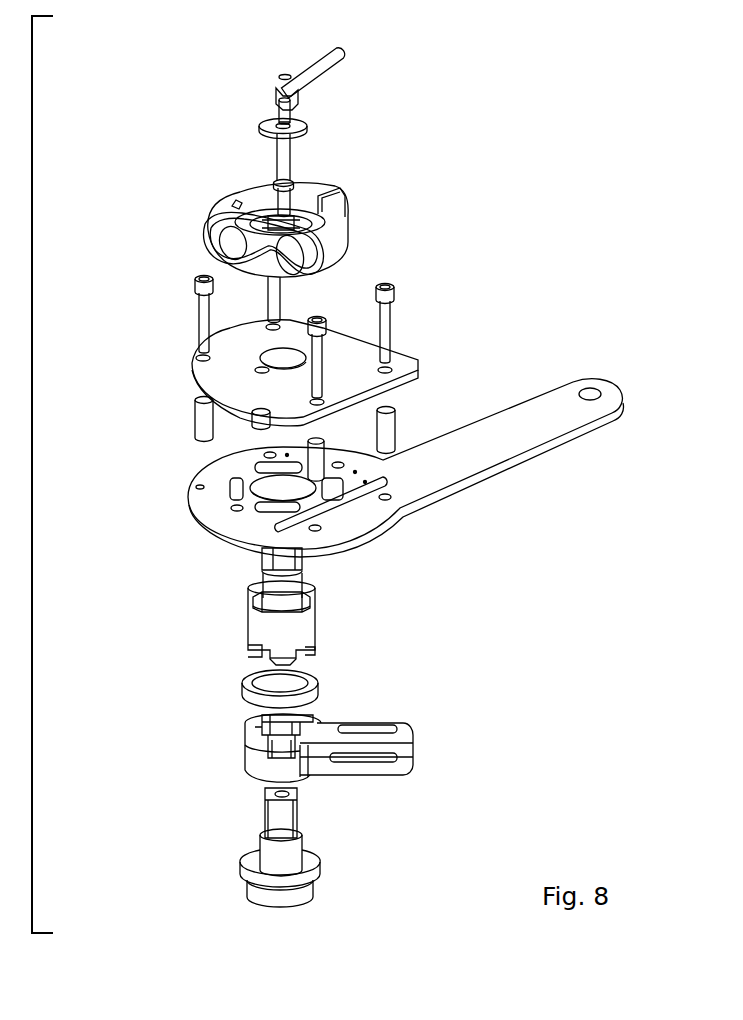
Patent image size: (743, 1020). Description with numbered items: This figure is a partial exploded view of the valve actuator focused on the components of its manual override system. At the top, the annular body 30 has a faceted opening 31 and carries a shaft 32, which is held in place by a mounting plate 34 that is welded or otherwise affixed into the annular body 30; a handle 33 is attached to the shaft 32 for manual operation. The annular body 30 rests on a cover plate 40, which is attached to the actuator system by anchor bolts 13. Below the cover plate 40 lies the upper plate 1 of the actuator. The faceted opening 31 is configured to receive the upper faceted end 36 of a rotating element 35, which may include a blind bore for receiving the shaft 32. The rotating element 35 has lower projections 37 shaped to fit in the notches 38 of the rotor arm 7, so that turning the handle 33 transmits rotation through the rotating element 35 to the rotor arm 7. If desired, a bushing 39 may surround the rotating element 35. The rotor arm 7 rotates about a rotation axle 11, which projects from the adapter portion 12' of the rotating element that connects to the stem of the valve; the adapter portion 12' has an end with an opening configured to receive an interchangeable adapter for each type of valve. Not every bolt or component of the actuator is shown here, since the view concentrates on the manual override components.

The upper plate 1 is at (540, 422).
The rotor arm 7 is at (257, 762).
The rotation axle 11 is at (285, 812).
The adapter portion 12' is at (232, 878).
The anchor bolts 13 is at (388, 322).
The annular body 30 is at (220, 220).
The faceted opening 31 is at (277, 230).
The shaft 32 is at (280, 113).
The handle 33 is at (323, 73).
The mounting plate 34 is at (310, 128).
The rotating element 35 is at (292, 622).
The upper faceted end 36 is at (287, 565).
The lower projections 37 is at (258, 652).
The notches 38 is at (253, 733).
The bushing 39 is at (320, 688).
The cover plate 40 is at (213, 368).